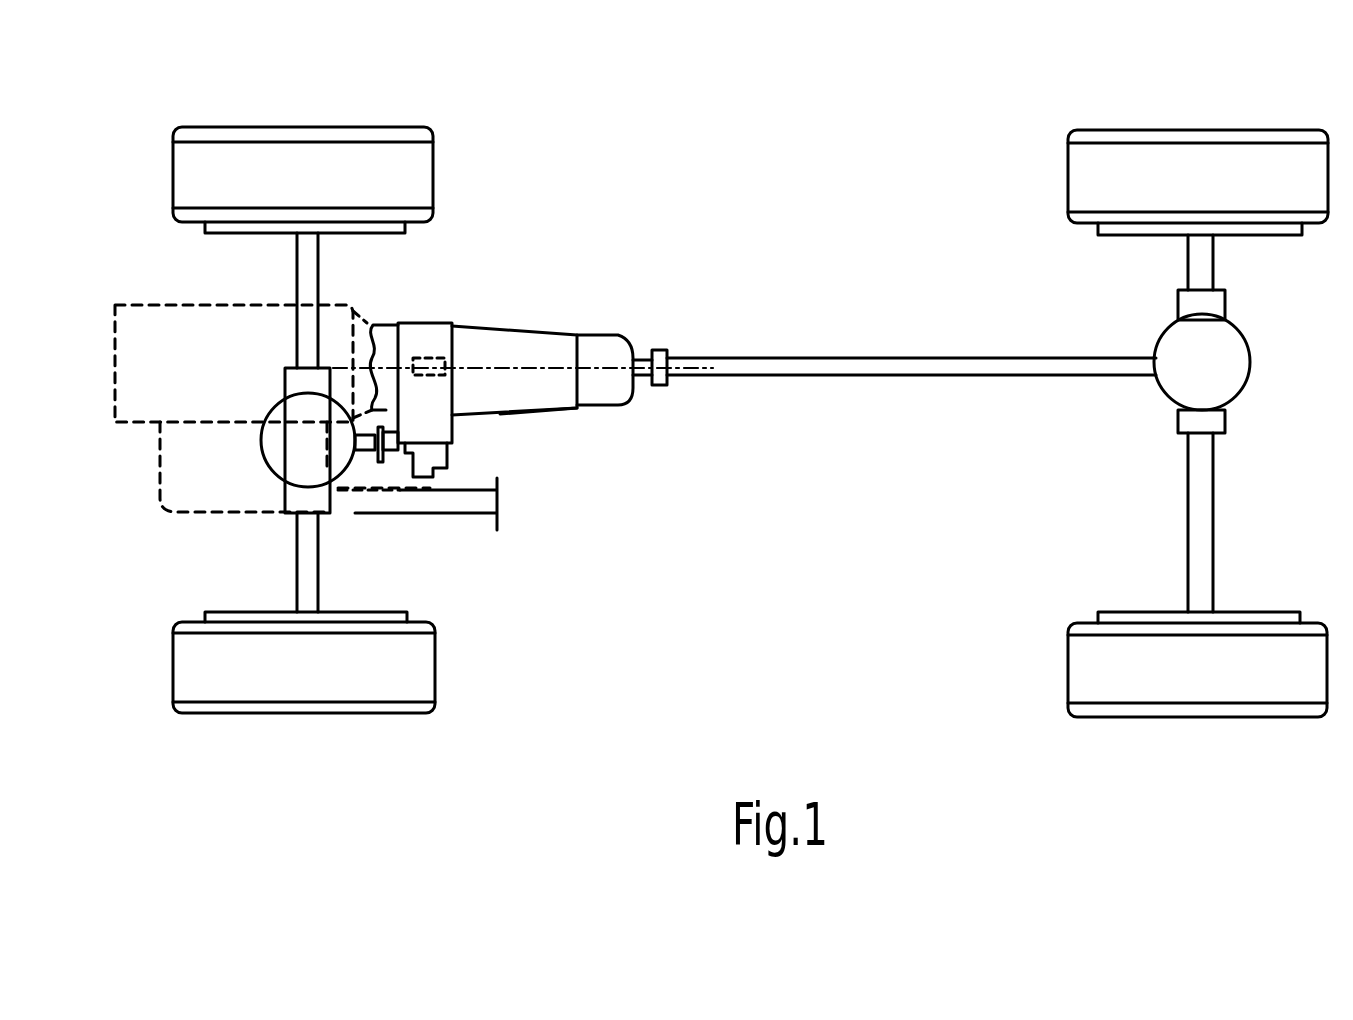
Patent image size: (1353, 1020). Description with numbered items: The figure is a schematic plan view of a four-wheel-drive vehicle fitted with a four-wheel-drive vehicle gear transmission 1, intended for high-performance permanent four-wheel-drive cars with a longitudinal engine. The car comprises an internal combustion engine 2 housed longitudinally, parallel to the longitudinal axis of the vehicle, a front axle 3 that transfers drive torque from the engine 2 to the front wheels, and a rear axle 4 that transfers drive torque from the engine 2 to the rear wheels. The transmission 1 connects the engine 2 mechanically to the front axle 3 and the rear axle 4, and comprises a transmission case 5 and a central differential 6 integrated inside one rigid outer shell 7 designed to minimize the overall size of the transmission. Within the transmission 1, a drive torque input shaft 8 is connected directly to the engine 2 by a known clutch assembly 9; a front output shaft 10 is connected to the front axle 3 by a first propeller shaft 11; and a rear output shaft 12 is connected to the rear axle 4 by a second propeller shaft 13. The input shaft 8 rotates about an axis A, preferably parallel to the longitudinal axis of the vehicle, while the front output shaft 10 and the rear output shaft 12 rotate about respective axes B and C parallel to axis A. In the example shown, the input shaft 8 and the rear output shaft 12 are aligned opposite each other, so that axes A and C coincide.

The four-wheel-drive vehicle gear transmission 1 is at (522, 338).
The internal combustion engine 2 is at (183, 323).
The front axle 3 is at (265, 468).
The rear axle 4 is at (1095, 507).
The transmission case 5 is at (530, 327).
The central differential 6 is at (602, 327).
The rigid outer shell 7 is at (557, 415).
The drive torque input shaft 8 is at (427, 358).
The clutch assembly 9 is at (383, 333).
The front output shaft 10 is at (393, 452).
The first propeller shaft 11 is at (360, 452).
The rear output shaft 12 is at (642, 376).
The second propeller shaft 13 is at (810, 358).
The axis of rotation of input shaft A is at (490, 368).
The axis of rotation of front output shaft B is at (443, 448).
The axis of rotation of rear output shaft C is at (695, 374).